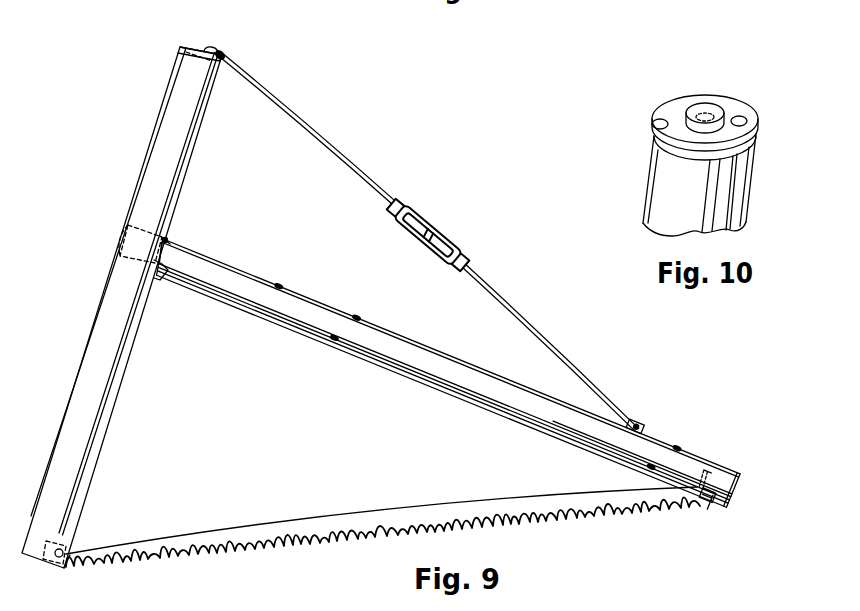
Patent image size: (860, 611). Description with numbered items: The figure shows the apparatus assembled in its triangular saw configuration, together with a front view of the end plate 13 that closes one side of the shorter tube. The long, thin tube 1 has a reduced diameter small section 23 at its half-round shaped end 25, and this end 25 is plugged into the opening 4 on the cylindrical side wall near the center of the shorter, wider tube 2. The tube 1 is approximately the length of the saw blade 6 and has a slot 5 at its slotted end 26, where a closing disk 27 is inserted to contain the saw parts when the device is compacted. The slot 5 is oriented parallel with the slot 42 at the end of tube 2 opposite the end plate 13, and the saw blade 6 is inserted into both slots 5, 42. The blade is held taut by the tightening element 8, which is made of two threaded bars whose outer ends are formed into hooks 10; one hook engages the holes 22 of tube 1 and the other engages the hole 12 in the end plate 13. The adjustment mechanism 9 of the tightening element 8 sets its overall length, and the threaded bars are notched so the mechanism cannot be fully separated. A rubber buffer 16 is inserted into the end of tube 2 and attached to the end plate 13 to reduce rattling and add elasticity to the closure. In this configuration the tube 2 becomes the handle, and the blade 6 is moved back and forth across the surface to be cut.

In FIG. 9, the tube 1 is at (401, 326).
In FIG. 9, the tube 2 is at (113, 426).
In FIG. 10, the tube 2 is at (757, 198).
In FIG. 9, the opening 4 is at (168, 272).
In FIG. 9, the slot 5 is at (710, 508).
In FIG. 9, the saw blade 6 is at (274, 519).
In FIG. 9, the tightening element 8 is at (516, 307).
In FIG. 9, the adjustment mechanism 9 is at (408, 212).
In FIG. 9, the hooks 10 is at (226, 53).
In FIG. 9, the hole 12 is at (211, 50).
In FIG. 10, the hole 12 is at (653, 124).
In FIG. 9, the end plate 13 is at (180, 47).
In FIG. 10, the end plate 13 is at (680, 103).
In FIG. 10, the rubber buffer 16 is at (706, 110).
In FIG. 9, the holes 22 is at (357, 319).
In FIG. 9, the small section 23 is at (170, 243).
In FIG. 9, the end 25 is at (122, 242).
In FIG. 9, the slotted end 26 is at (742, 494).
In FIG. 9, the closing disk 27 is at (718, 470).
In FIG. 9, the slot 42 is at (68, 553).